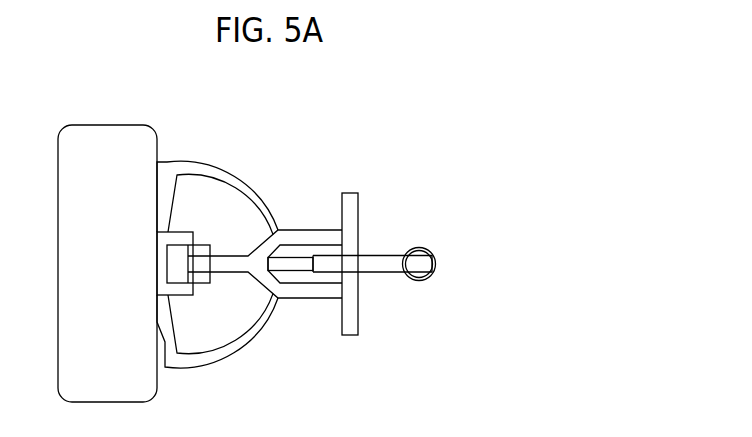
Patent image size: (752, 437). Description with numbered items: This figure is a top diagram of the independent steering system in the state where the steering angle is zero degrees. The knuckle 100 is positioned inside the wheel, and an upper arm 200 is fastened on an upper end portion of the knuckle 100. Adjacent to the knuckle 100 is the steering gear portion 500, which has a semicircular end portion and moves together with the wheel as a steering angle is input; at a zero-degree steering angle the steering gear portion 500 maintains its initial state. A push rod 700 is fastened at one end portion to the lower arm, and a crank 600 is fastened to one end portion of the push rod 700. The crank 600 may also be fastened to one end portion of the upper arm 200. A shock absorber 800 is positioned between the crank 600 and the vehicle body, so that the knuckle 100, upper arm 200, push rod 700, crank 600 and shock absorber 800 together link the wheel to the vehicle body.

The knuckle 100 is at (162, 247).
The steering gear portion 500 is at (217, 175).
The upper arm 200 is at (279, 231).
The push rod 700 is at (297, 262).
The crank 600 is at (380, 262).
The shock absorber 800 is at (426, 234).